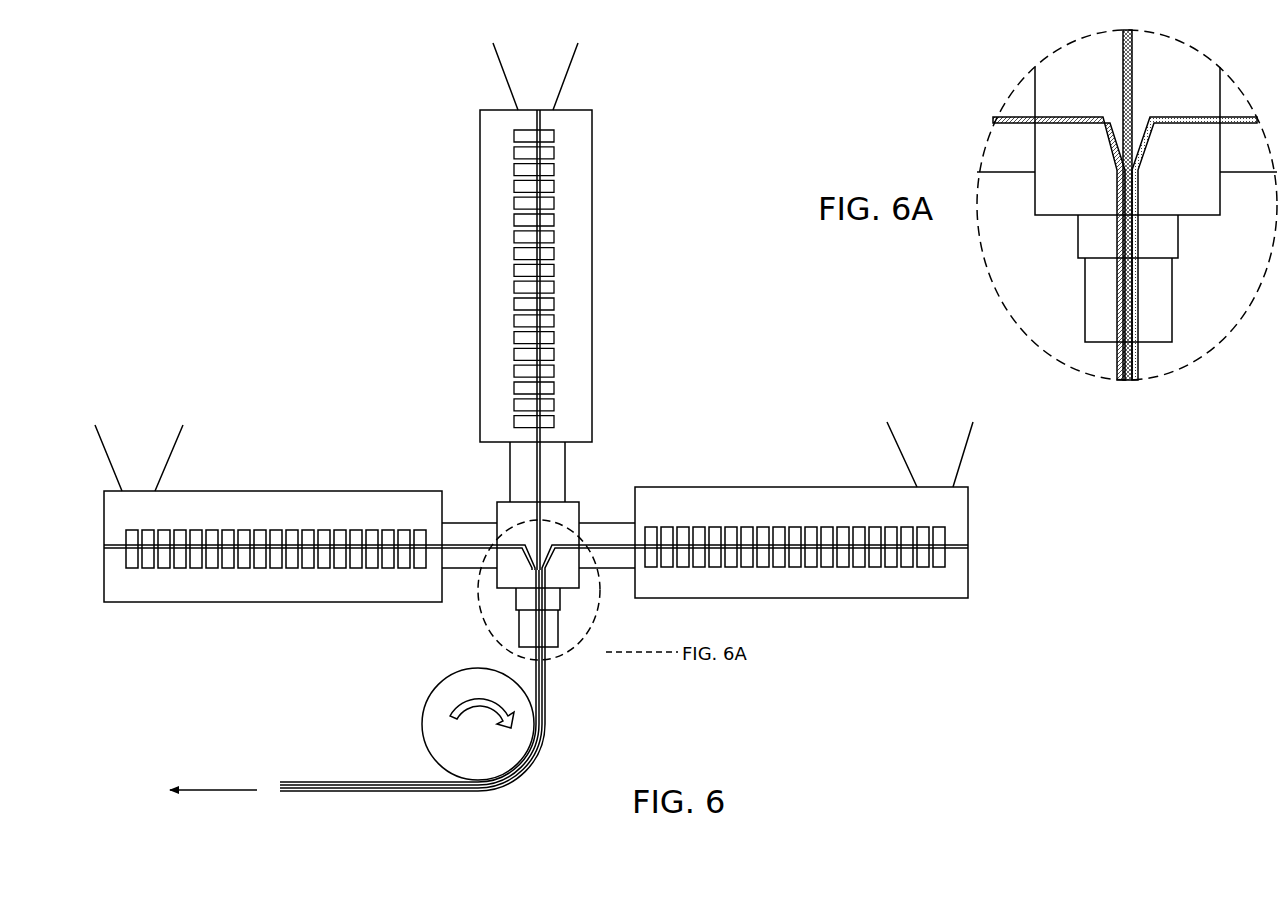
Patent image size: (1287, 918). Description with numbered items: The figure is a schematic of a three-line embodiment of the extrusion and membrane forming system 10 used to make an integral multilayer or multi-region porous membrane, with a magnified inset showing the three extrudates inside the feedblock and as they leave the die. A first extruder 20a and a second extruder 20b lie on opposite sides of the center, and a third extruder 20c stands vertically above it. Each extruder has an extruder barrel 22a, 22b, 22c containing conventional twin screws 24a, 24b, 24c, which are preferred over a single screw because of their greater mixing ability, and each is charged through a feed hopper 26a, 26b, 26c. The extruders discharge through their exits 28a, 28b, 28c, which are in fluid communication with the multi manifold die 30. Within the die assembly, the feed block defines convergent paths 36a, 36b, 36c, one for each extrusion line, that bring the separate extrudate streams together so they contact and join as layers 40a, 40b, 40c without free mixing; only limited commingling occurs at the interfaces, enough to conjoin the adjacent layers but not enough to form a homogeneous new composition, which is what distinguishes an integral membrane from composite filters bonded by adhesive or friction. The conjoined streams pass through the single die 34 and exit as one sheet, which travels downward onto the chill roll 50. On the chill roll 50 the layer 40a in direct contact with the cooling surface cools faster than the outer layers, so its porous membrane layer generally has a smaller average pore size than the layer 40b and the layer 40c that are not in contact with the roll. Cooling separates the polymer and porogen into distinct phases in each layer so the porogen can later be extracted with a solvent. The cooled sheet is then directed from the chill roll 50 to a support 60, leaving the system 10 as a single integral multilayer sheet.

In FIG. 6, the system 10 is at (642, 84).
In FIG. 6, the first extruder 20a is at (234, 432).
In FIG. 6, the second extruder 20b is at (699, 456).
In FIG. 6, the third extruder 20c is at (627, 160).
In FIG. 6, the extruder barrel 22a is at (268, 505).
In FIG. 6, the extruder barrel 22b is at (717, 502).
In FIG. 6, the extruder barrel 22c is at (583, 210).
In FIG. 6, the twin screws 24a is at (326, 537).
In FIG. 6, the twin screws 24b is at (761, 527).
In FIG. 6, the twin screws 24c is at (556, 268).
In FIG. 6, the feed hopper 26a is at (168, 465).
In FIG. 6, the feed hopper 26b is at (960, 462).
In FIG. 6, the feed hopper 26c is at (505, 78).
In FIG. 6, the exit 28a is at (460, 542).
In FIG. 6, the exit 28b is at (615, 542).
In FIG. 6, the exit 28c is at (540, 463).
In FIG. 6, the multi manifold die 30 is at (585, 590).
In FIG. 6A, the multi manifold die 30 is at (1218, 224).
In FIG. 6, the die 34 is at (525, 623).
In FIG. 6A, the die 34 is at (1093, 233).
In FIG. 6, the convergent path 36a is at (532, 562).
In FIG. 6A, the convergent path 36a is at (1107, 145).
In FIG. 6, the convergent path 36b is at (569, 573).
In FIG. 6A, the convergent path 36b is at (1198, 122).
In FIG. 6, the convergent path 36c is at (538, 340).
In FIG. 6A, the convergent path 36c is at (1132, 83).
In FIG. 6, the layer 40a is at (535, 665).
In FIG. 6A, the layer 40a is at (1117, 372).
In FIG. 6, the layer 40b is at (545, 707).
In FIG. 6A, the layer 40b is at (1138, 372).
In FIG. 6, the layer 40c is at (543, 737).
In FIG. 6A, the layer 40c is at (1128, 385).
In FIG. 6, the chill roll 50 is at (440, 747).
In FIG. 6, the support 60 is at (473, 793).